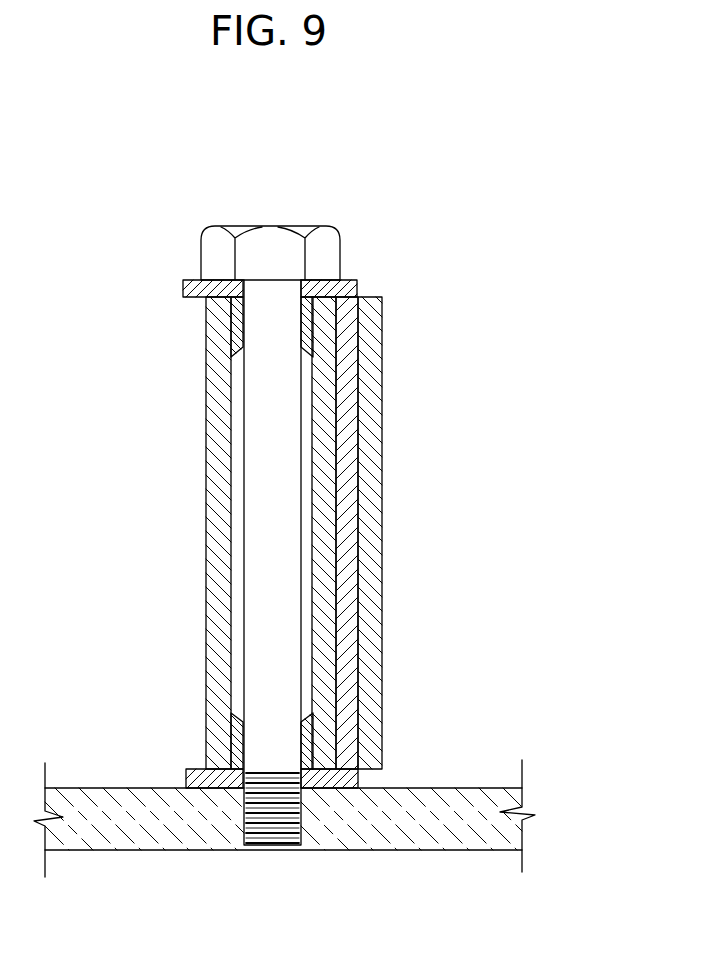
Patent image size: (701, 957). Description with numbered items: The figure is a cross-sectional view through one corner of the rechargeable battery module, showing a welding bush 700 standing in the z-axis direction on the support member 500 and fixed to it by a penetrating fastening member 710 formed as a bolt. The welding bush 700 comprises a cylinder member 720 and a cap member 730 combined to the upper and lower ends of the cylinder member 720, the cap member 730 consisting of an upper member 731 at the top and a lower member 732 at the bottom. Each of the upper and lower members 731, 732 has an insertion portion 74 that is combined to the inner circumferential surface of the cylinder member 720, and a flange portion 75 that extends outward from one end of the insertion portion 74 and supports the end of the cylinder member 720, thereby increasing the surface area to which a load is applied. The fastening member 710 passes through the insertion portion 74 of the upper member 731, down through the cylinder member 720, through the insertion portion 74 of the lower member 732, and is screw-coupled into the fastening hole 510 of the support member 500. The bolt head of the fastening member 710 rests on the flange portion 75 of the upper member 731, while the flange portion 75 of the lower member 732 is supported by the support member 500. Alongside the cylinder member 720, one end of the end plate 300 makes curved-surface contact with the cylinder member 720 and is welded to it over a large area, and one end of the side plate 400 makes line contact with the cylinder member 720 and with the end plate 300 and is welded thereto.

The welding bush 700 is at (402, 222).
The fastening member 710 is at (270, 518).
The cylinder member 720 is at (222, 446).
The cap member 730 is at (355, 528).
The upper member 731 is at (358, 286).
The lower member 732 is at (364, 777).
The insertion portion 74 is at (236, 326).
The flange portion 75 is at (193, 290).
The end plate 300 is at (348, 390).
The side plate 400 is at (368, 492).
The support member 500 is at (408, 830).
The fastening hole 510 is at (296, 846).